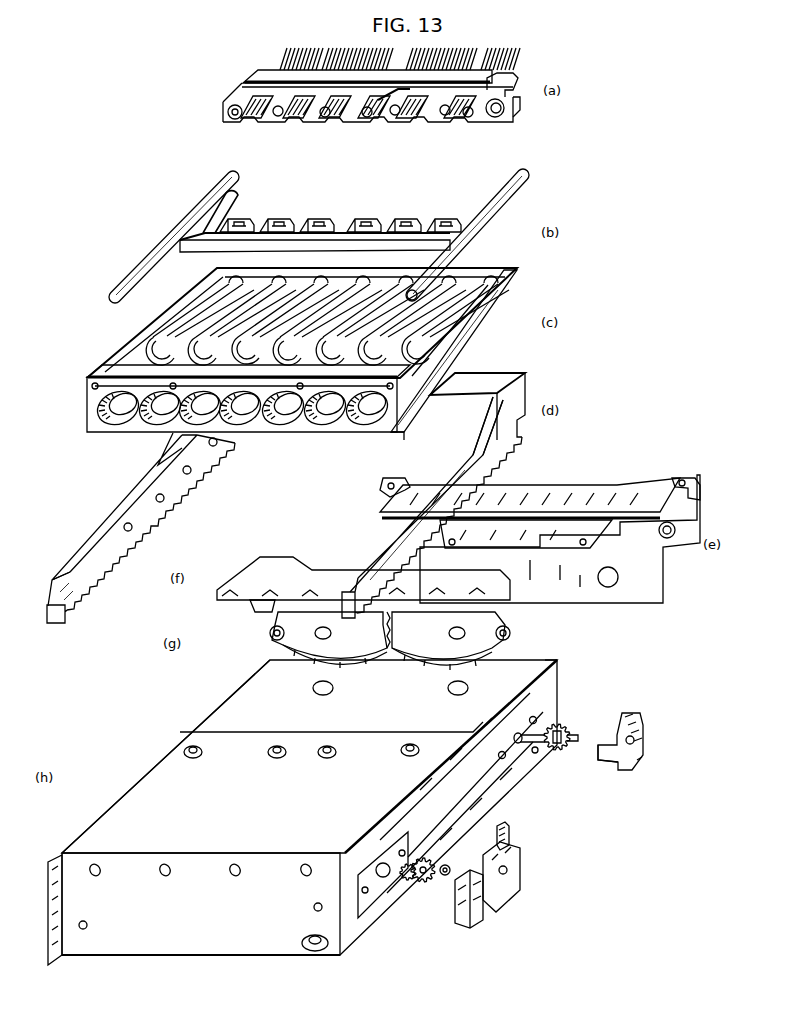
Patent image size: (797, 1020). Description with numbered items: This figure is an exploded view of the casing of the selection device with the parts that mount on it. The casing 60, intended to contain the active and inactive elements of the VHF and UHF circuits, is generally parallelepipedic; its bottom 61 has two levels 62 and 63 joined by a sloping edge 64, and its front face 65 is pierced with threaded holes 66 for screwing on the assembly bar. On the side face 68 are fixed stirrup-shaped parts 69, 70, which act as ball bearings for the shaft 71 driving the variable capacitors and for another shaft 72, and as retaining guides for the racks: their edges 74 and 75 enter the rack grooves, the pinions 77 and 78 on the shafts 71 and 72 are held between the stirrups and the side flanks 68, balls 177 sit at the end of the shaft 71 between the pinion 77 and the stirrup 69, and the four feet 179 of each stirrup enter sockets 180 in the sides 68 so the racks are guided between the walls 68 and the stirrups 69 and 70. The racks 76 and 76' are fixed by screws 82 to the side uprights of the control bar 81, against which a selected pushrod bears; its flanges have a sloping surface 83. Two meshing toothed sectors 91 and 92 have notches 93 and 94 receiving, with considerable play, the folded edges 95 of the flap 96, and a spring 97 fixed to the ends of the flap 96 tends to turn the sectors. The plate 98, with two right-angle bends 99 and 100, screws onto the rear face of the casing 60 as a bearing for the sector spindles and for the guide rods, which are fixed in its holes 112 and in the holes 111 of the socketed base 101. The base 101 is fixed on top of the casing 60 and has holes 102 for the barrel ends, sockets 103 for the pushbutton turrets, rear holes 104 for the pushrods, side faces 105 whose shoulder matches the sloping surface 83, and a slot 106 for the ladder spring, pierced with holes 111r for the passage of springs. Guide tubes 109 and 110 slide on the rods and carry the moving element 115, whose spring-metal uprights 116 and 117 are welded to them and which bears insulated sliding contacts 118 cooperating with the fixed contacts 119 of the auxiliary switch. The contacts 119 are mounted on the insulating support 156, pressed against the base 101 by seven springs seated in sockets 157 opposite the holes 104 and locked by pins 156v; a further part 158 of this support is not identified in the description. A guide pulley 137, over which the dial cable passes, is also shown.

The casing 60 is at (505, 780).
The bottom 61 is at (175, 745).
The level 62 is at (102, 818).
The level 63 is at (555, 665).
The sloping edge 64 is at (475, 732).
The front face 65 is at (268, 952).
The threaded holes 66 is at (304, 875).
The side face 68 is at (368, 925).
The stirrup-shaped part 69 is at (500, 895).
The stirrup-shaped part 70 is at (643, 742).
The shaft 71 is at (425, 857).
The shaft 72 is at (540, 748).
The edge 74 is at (478, 915).
The edge 75 is at (620, 770).
The rack 76 is at (432, 507).
The rack 76' is at (87, 591).
The pinion 77 is at (418, 882).
The pinion 78 is at (565, 725).
The control bar 81 is at (476, 385).
The screws 82 is at (135, 527).
The sloping surface 83 is at (474, 448).
The toothed sector 91 is at (300, 660).
The toothed sector 92 is at (415, 660).
The notch 93 is at (270, 630).
The notch 94 is at (510, 630).
The folded edges 95 is at (250, 572).
The flap 96 is at (305, 572).
The spring 97 is at (268, 590).
The plate 98 is at (662, 588).
The bend 99 is at (560, 548).
The bend 100 is at (545, 498).
The socketed base 101 is at (406, 410).
The holes 102 is at (286, 425).
The sockets 103 is at (322, 342).
The holes 104 is at (444, 280).
The side faces 105 is at (466, 343).
The slot 106 is at (340, 420).
The guide tube 109 is at (524, 189).
The guide tube 110 is at (185, 222).
The holes 111 is at (93, 387).
The holes 111r is at (130, 372).
The holes 112 is at (395, 480).
The moving element 115 is at (336, 233).
The upright 116 is at (480, 213).
The upright 117 is at (230, 205).
The insulated sliding contacts 118 is at (303, 219).
The fixed contacts 119 is at (345, 118).
The guide pulley 137 is at (314, 952).
The insulating support 156 is at (513, 86).
The pins 156v is at (516, 112).
The sockets 157 is at (500, 117).
The terminal 158 is at (385, 112).
The balls 177 is at (450, 866).
The feet 179 is at (510, 832).
The sockets 180 is at (385, 880).